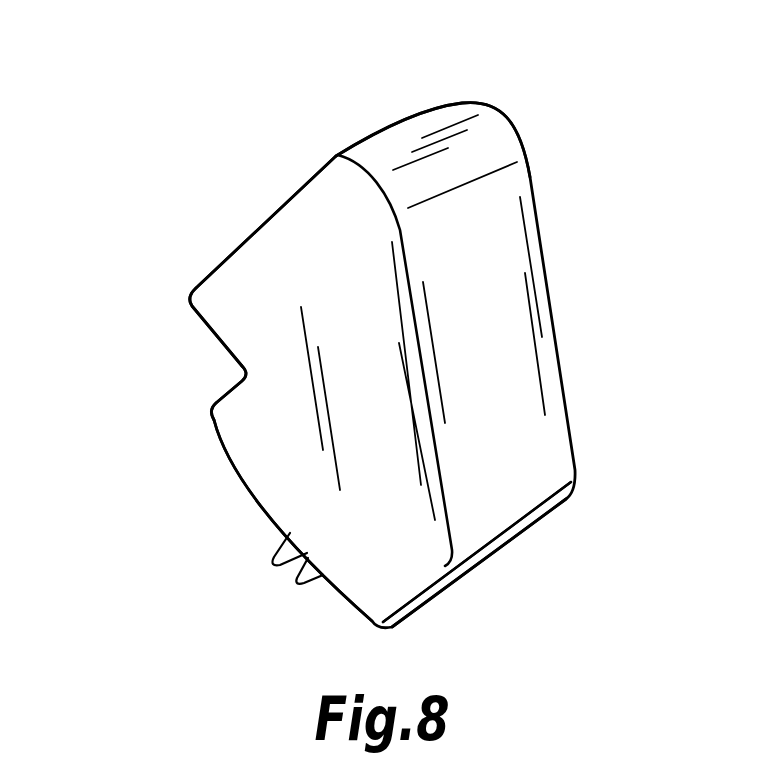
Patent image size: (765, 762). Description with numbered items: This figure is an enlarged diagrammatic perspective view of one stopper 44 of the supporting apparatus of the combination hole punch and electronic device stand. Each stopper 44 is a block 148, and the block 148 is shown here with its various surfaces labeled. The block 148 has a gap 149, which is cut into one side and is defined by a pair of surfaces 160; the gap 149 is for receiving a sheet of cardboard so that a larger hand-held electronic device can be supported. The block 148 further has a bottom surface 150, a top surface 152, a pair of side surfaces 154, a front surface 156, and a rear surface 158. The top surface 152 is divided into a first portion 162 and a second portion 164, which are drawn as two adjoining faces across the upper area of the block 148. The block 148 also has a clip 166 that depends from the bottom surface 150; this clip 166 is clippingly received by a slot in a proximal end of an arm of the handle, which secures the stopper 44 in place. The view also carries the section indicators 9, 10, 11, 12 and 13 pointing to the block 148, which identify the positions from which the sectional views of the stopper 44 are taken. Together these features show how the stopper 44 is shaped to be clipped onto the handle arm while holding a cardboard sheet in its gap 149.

The side panel 9 is at (620, 200).
The bottom panel 10 is at (577, 600).
The front panel 11 is at (272, 602).
The notched side panel 12 is at (143, 408).
The top panel 13 is at (242, 148).
The stopper 44 is at (313, 157).
The block 148 is at (427, 107).
The gap 149 is at (232, 374).
The bottom surface 150 is at (245, 475).
The top surface 152 is at (492, 150).
The pair of side surfaces 154 is at (314, 262).
The front surface 156 is at (293, 193).
The rear surface 158 is at (452, 572).
The pair of surfaces 160 is at (203, 323).
The first portion 162 is at (403, 142).
The second portion 164 is at (490, 328).
The clip 166 is at (308, 582).